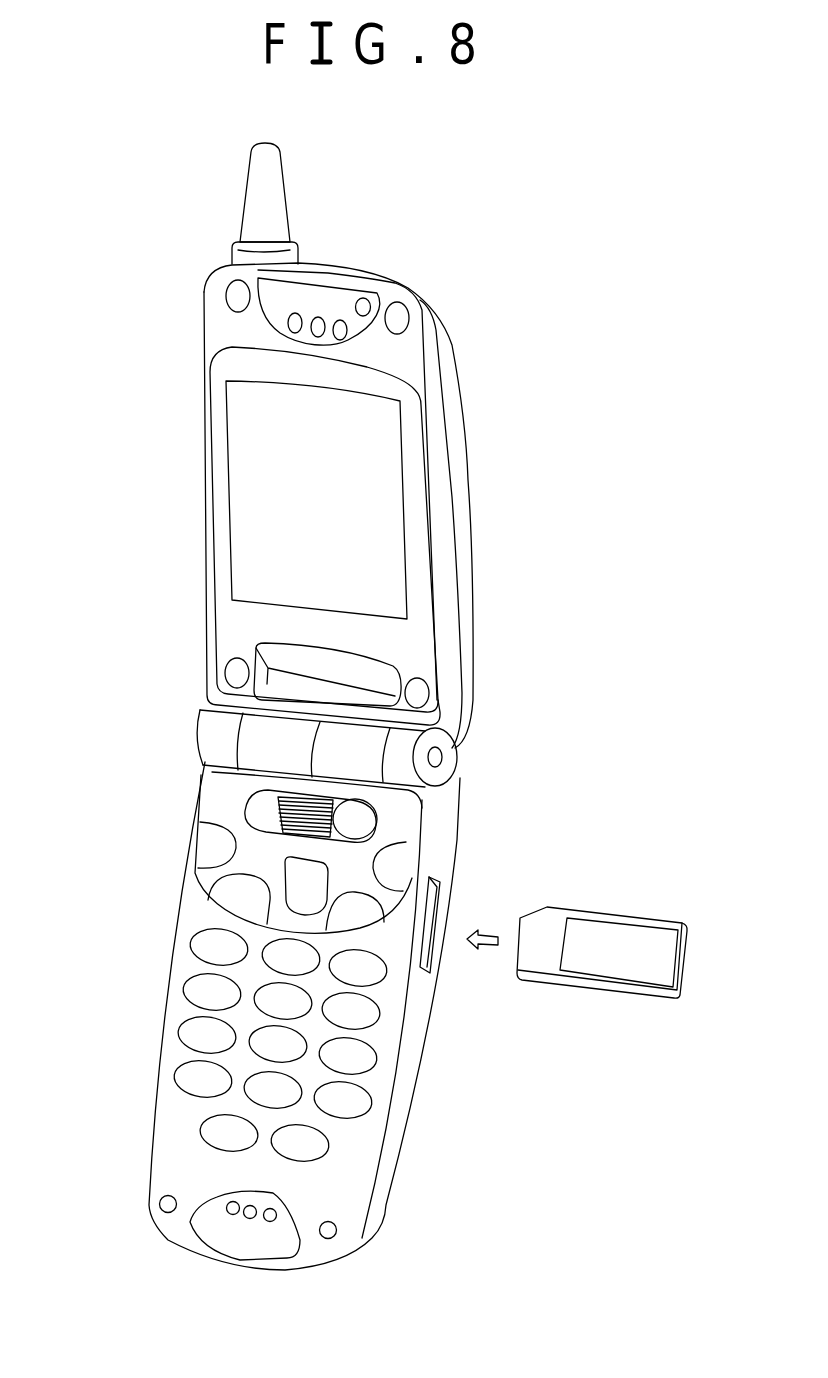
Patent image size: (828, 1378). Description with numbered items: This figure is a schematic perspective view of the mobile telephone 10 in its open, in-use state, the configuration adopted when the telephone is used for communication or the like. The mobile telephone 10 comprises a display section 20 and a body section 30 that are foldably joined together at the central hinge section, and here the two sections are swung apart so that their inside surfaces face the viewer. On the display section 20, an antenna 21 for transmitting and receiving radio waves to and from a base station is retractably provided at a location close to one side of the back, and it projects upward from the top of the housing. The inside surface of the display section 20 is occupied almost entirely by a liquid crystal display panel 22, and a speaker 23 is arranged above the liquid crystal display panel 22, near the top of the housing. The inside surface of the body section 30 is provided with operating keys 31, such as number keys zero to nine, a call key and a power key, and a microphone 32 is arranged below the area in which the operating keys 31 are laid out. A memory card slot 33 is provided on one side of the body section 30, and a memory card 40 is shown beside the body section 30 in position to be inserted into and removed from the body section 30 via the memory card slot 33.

The mobile telephone 10 is at (527, 305).
The display section 20 is at (443, 481).
The antenna 21 is at (262, 191).
The liquid crystal display panel 22 is at (250, 507).
The speaker 23 is at (314, 312).
The body section 30 is at (173, 1107).
The operating keys 31 is at (390, 853).
The microphone 32 is at (236, 1232).
The memory card slot 33 is at (430, 953).
The memory card 40 is at (596, 932).